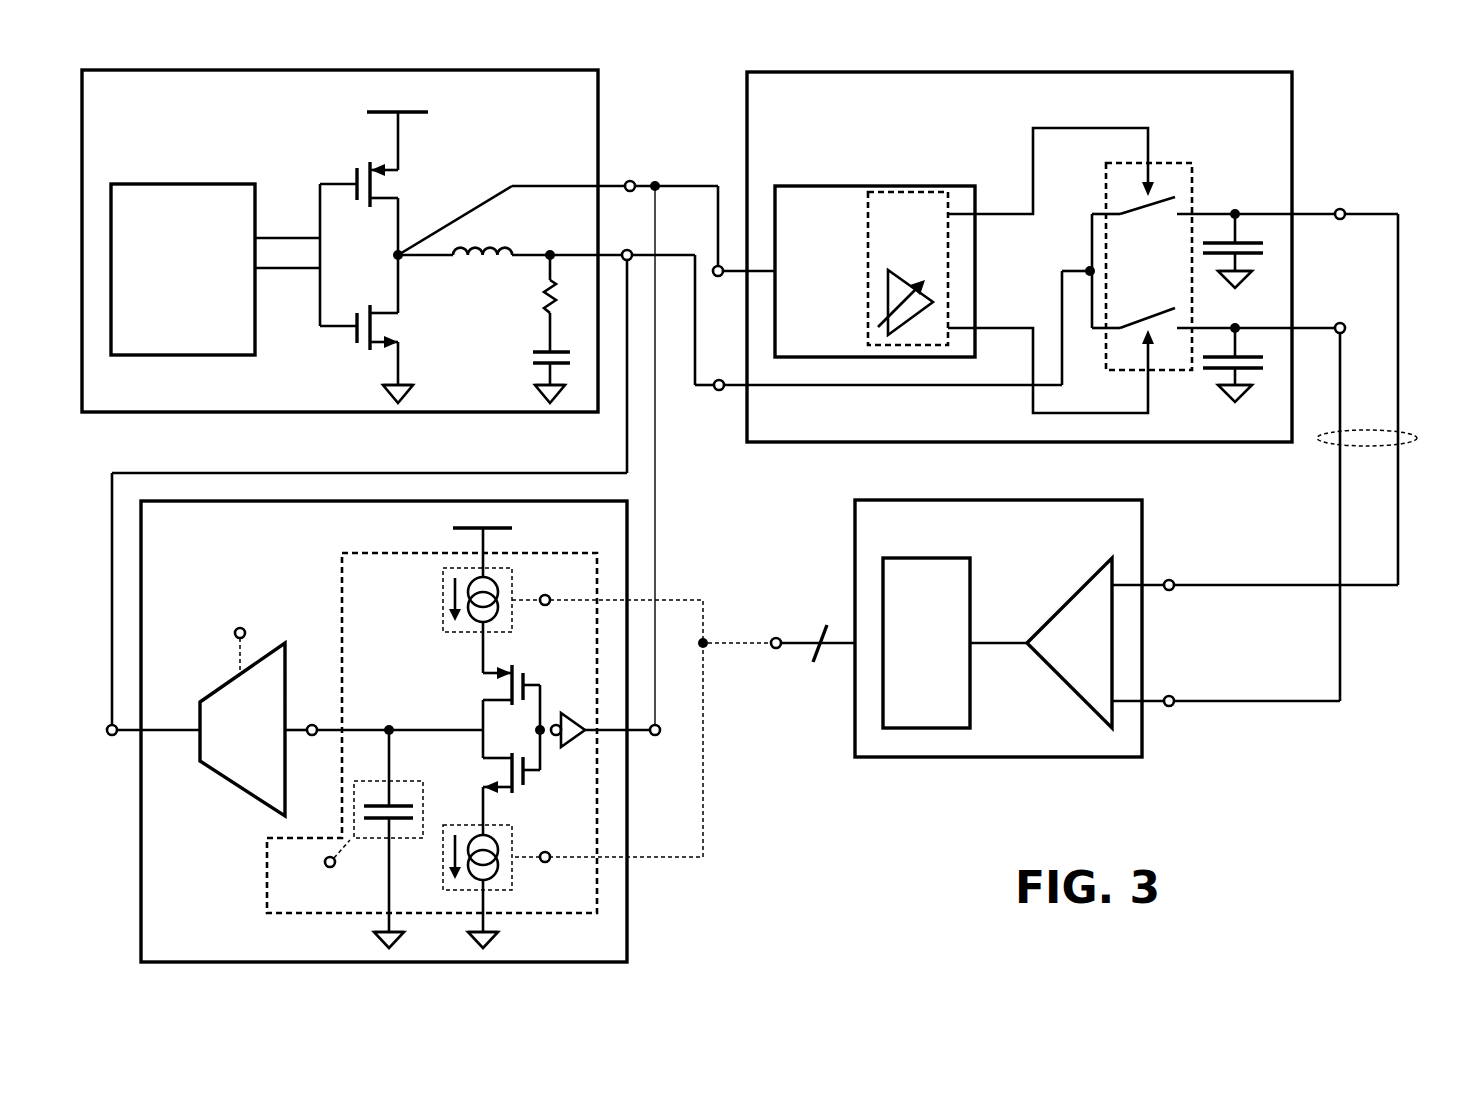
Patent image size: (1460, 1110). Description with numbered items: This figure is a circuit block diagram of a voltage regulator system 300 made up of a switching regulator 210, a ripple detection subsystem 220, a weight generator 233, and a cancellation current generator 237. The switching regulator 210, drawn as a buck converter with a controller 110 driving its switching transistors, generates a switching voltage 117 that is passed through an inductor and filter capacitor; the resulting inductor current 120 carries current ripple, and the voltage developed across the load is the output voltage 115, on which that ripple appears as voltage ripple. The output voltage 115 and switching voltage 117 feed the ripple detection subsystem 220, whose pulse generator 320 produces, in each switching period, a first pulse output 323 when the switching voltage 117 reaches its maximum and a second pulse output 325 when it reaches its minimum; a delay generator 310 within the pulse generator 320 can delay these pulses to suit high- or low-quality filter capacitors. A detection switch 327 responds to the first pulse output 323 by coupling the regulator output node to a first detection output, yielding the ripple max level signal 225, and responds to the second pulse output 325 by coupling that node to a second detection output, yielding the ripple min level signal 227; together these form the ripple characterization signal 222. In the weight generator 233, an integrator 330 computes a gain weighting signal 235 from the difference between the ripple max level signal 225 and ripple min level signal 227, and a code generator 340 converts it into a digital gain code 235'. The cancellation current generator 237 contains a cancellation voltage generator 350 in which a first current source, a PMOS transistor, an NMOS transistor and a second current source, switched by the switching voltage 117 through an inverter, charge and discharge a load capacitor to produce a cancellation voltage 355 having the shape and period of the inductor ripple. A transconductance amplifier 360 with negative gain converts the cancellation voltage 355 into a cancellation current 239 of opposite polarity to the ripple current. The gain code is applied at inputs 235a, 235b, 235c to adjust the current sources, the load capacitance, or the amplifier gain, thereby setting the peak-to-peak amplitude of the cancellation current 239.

The voltage regulator system 300 is at (1292, 797).
The switching regulator 210 is at (340, 241).
The controller 110 is at (215, 269).
The inductor current 120 is at (408, 265).
The switching voltage 117 is at (586, 459).
The output voltage 115 is at (603, 471).
The ripple detection subsystem 220 is at (1072, 386).
The pulse generator 320 is at (875, 271).
The delay generator 310 is at (908, 268).
The first pulse output 323 is at (1051, 171).
The second pulse output 325 is at (1051, 354).
The detection switch 327 is at (1143, 254).
The ripple max level signal 225 is at (1287, 382).
The ripple min level signal 227 is at (1270, 496).
The ripple characterization signal 222 is at (1415, 437).
The cancellation current generator 237 is at (407, 731).
The cancellation current 239 is at (193, 719).
The transconductance amplifier 360 is at (242, 729).
The gain control signal 235c is at (236, 633).
The cancellation voltage 355 is at (384, 715).
The cancellation voltage generator 350 is at (458, 738).
The current source control signal 235a is at (610, 717).
The capacitor control signal 235b is at (357, 839).
The gain code 235' is at (781, 633).
The weight generator 233 is at (1126, 628).
The code generator 340 is at (926, 643).
The gain weighting signal 235 is at (998, 628).
The integrator 330 is at (1212, 643).